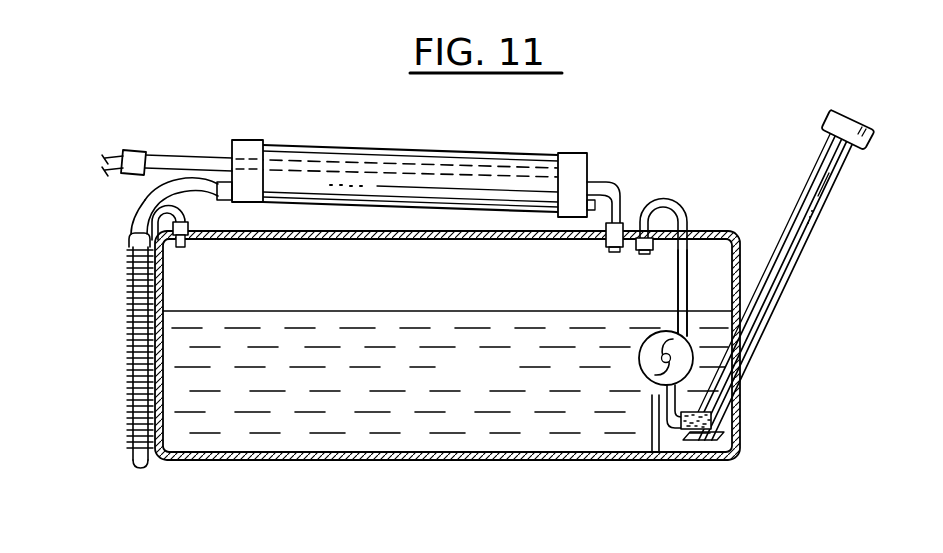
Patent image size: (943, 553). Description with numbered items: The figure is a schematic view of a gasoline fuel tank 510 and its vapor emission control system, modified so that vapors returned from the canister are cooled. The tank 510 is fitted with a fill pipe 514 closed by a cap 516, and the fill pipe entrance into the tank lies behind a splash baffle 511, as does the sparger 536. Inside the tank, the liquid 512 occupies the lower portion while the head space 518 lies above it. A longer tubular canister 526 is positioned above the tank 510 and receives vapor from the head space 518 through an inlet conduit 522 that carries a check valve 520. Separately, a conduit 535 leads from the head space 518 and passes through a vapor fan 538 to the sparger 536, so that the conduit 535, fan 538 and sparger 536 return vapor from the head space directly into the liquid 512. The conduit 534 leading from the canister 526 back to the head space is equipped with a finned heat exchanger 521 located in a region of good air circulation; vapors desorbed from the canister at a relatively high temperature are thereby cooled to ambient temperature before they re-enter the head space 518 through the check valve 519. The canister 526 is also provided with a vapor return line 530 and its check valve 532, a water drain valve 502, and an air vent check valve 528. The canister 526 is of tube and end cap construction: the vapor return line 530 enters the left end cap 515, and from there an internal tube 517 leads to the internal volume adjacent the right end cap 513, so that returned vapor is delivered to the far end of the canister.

The water drain valve 502 is at (592, 231).
The gasoline fuel tank 510 is at (720, 229).
The splash baffle 511 is at (650, 443).
The liquid 512 is at (450, 380).
The right end cap 513 is at (578, 160).
The fill pipe 514 is at (781, 294).
The left end cap 515 is at (249, 148).
The cap 516 is at (849, 126).
The internal tube 517 is at (494, 167).
The head space 518 is at (447, 287).
The check valve 519 is at (192, 228).
The check valve 520 is at (617, 232).
The finned heat exchanger 521 is at (131, 431).
The inlet conduit 522 is at (612, 182).
The tubular canister 526 is at (419, 136).
The air vent check valve 528 is at (217, 183).
The vapor return line 530 is at (181, 155).
The check valve 532 is at (131, 150).
The conduit 534 is at (146, 198).
The conduit 535 is at (678, 282).
The sparger 536 is at (712, 422).
The vapor fan 538 is at (683, 366).